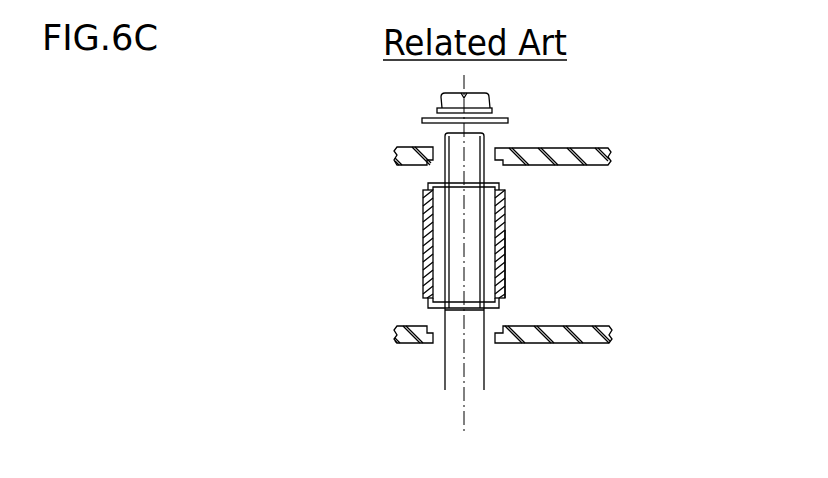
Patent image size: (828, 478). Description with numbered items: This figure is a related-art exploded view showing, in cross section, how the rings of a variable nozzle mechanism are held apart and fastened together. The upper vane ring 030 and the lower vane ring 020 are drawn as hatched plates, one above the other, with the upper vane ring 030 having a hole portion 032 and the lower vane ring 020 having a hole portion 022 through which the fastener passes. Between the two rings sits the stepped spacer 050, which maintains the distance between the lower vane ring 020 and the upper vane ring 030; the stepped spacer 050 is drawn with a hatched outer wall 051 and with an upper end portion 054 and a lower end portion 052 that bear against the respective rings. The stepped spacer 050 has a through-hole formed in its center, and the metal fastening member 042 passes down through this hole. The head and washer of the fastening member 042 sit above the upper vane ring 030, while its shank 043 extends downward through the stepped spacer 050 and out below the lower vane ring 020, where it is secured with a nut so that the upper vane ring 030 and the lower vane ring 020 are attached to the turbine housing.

The fastening member 042 is at (487, 140).
The bolt shank 043 is at (484, 370).
The upper vane ring 030 is at (595, 150).
The upper plate hole portion 032 is at (433, 162).
The lower vane ring 020 is at (588, 338).
The lower plate hole portion 022 is at (432, 327).
The stepped spacer 050 is at (506, 214).
The collar outer wall 051 is at (506, 271).
The collar upper flange 054 is at (428, 190).
The collar lower flange 052 is at (428, 303).